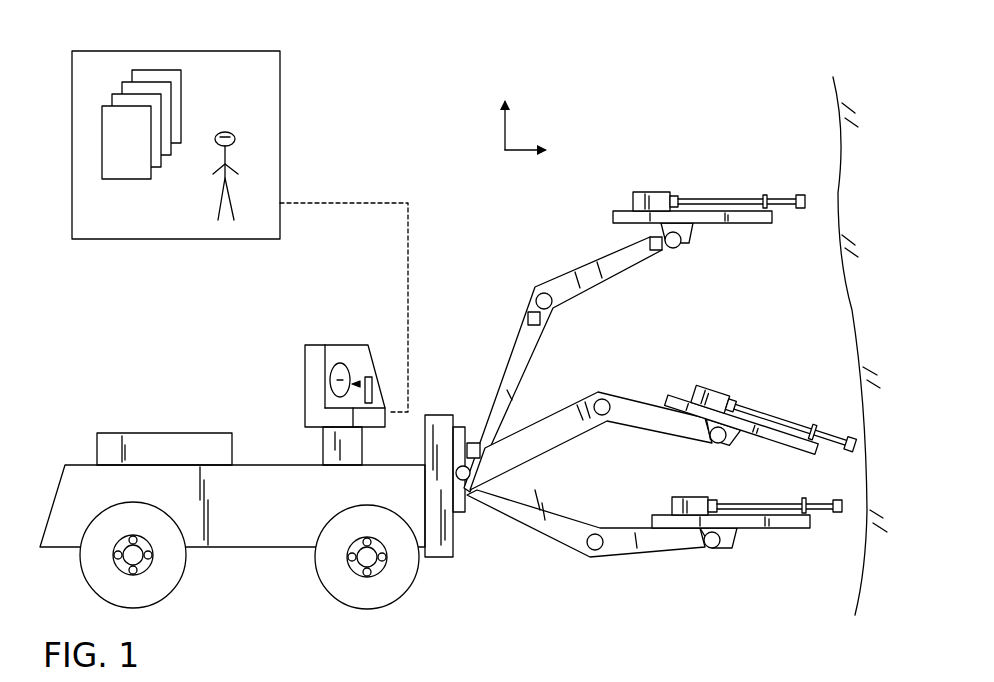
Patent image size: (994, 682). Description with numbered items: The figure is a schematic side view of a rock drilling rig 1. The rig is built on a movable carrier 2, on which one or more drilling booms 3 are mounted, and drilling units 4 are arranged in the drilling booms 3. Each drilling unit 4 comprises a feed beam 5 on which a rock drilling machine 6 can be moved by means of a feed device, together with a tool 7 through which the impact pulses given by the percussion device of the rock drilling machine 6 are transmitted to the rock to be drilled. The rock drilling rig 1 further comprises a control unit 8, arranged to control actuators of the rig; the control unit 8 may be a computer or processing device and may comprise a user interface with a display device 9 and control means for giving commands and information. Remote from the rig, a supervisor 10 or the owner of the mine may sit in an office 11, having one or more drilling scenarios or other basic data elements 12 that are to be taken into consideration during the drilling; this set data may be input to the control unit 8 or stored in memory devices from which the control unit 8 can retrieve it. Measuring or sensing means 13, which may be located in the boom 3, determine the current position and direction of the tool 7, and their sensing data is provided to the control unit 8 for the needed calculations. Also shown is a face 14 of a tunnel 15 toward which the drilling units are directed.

The rock drilling rig 1 is at (205, 355).
The movable carrier 2 is at (263, 528).
The drilling boom 3 is at (567, 284).
The drilling unit 4 is at (695, 158).
The feed beam 5 is at (770, 223).
The rock drilling machine 6 is at (653, 192).
The tool 7 is at (798, 195).
The control unit 8 is at (375, 420).
The display device 9 is at (372, 388).
The supervisor 10 is at (228, 158).
The office 11 is at (254, 103).
The basic data elements 12 is at (150, 72).
The sensing means 13 is at (472, 442).
The face 14 is at (880, 203).
The tunnel 15 is at (647, 91).